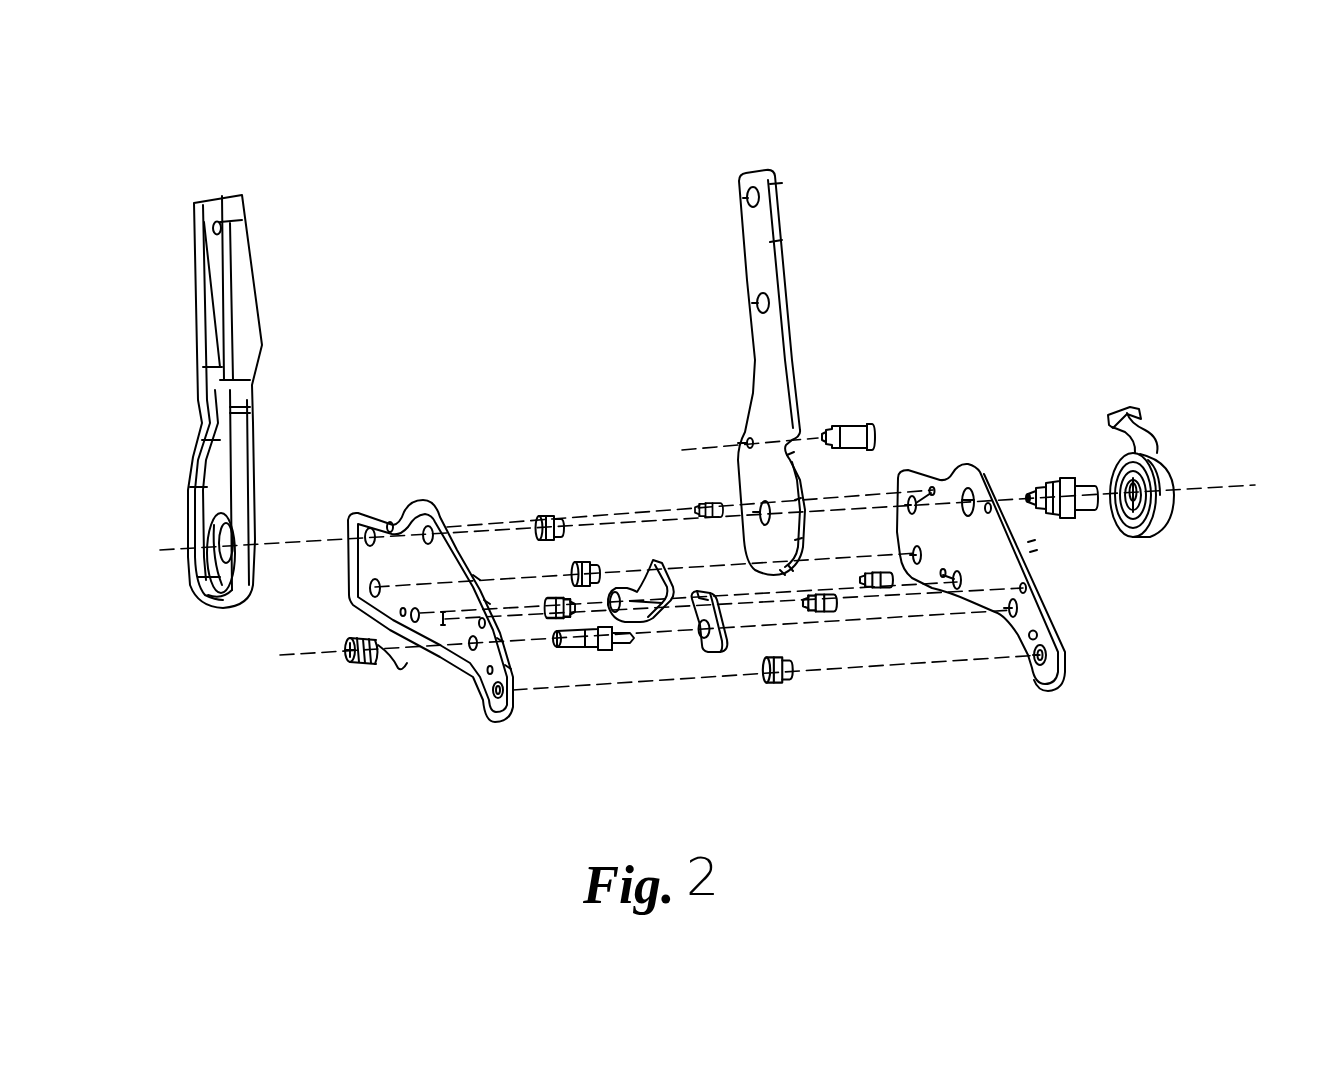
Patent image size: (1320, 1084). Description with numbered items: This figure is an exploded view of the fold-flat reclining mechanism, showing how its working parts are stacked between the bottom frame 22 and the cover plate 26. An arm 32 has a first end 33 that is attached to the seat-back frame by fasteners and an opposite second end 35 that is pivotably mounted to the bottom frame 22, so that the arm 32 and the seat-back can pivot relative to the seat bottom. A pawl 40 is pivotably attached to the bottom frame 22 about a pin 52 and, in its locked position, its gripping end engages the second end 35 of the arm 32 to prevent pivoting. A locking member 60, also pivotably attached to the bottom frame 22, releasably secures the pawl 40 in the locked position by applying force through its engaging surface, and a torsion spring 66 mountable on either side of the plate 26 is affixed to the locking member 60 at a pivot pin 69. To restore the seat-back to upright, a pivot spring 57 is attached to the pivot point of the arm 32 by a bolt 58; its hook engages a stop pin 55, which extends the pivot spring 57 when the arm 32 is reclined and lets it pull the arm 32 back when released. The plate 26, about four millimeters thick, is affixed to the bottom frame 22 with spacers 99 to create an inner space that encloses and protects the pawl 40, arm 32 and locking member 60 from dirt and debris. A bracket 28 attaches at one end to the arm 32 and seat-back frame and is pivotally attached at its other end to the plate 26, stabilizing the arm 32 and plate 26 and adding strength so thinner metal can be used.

The bottom frame 22 is at (977, 462).
The plate 26 is at (362, 500).
The bracket 28 is at (264, 343).
The arm 32 is at (776, 168).
The first end 33 is at (770, 242).
The second end 35 is at (740, 475).
The pawl 40 is at (653, 558).
The pin 52 is at (553, 598).
The stop pin 55 is at (875, 421).
The pivot spring 57 is at (1144, 403).
The bolt 58 is at (1070, 514).
The locking member 60 is at (705, 654).
The torsion spring 66 is at (357, 667).
The pivot pin 69 is at (602, 652).
The spacers 99 is at (551, 515).